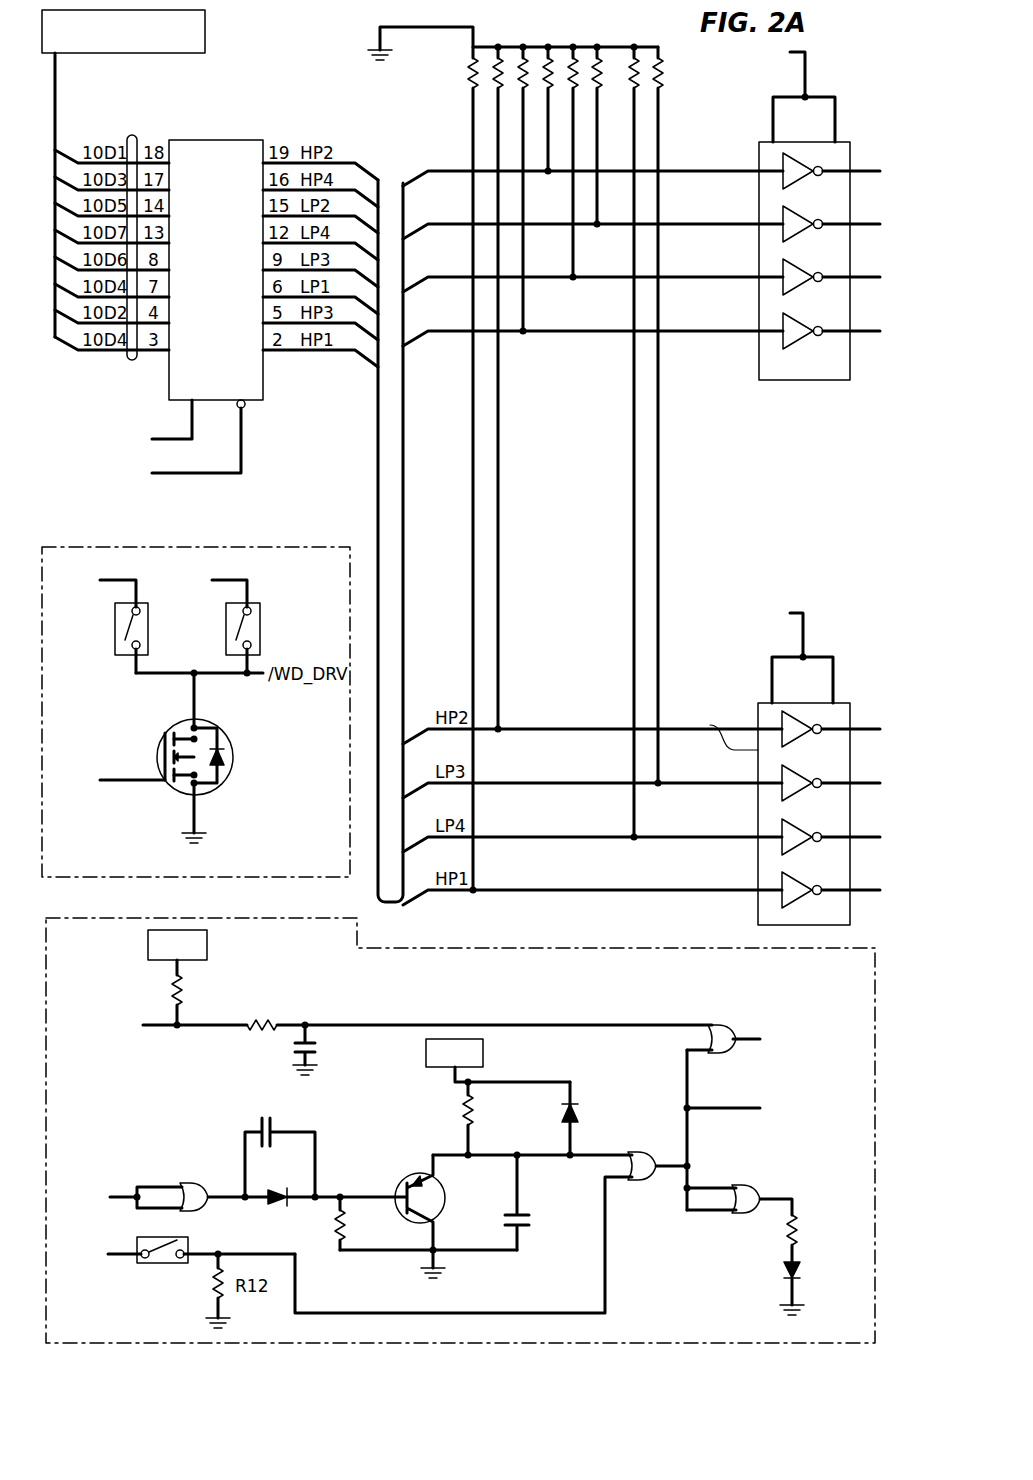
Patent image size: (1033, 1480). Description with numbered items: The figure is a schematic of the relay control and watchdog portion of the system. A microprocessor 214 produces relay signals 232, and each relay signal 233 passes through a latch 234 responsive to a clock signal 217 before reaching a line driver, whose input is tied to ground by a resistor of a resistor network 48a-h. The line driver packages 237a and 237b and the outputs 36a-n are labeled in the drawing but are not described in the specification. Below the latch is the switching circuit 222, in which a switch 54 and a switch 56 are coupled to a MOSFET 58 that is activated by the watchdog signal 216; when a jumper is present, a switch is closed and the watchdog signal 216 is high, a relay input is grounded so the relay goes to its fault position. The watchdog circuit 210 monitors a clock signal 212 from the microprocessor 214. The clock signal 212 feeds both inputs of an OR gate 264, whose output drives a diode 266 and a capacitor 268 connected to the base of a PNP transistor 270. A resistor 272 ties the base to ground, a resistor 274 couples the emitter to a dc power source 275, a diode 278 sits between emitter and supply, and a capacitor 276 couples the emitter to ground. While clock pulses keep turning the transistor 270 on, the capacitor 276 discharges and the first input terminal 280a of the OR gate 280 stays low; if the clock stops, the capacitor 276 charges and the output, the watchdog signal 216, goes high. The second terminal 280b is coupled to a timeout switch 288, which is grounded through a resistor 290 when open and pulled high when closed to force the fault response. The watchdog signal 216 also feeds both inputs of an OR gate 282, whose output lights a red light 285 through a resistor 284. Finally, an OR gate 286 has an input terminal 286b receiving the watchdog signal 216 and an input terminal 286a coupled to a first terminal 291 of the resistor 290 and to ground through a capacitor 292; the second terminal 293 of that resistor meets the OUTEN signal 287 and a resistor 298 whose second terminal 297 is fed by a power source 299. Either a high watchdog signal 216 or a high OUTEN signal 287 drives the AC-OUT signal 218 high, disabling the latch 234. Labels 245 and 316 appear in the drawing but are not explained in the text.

The microprocessor 214 is at (205, 30).
The relay signal 233 is at (58, 150).
The relay signals 232 is at (133, 135).
The latch 234 is at (263, 140).
The clock signal 217 is at (190, 430).
The AC-OUT signal 218 is at (245, 450).
The resistor network 48a-h is at (560, 47).
The driver U12 ULH2060 237a is at (760, 142).
The driver outputs 36a-n is at (783, 340).
The driver U13 ULH2060 237b is at (760, 703).
The switching circuit 222 is at (290, 547).
The switch 54 is at (115, 635).
The switch 56 is at (260, 610).
The MOSFET 58 is at (230, 730).
The watchdog signal 216 is at (118, 783).
The watchdog circuit 210 is at (490, 948).
The power source 299 is at (148, 950).
The second terminal 297 is at (175, 975).
The resistor 298 is at (185, 985).
The OUT EN node 245 is at (175, 1016).
The OUTEN signal 287 is at (157, 1030).
The second terminal 293 is at (205, 1032).
The resistor 290 is at (270, 1015).
The first terminal 291 is at (305, 1022).
The capacitor 292 is at (295, 1050).
The input terminal 286a is at (657, 1025).
The OR gate 286 is at (708, 1022).
The input terminal 286b is at (690, 1053).
The MD output 316 is at (740, 1108).
The clock signal 212 is at (118, 1195).
The OR gate 264 is at (185, 1182).
The capacitor 268 is at (275, 1125).
The diode 266 is at (268, 1202).
The timeout switch 288 is at (137, 1240).
The resistor 272 is at (335, 1240).
The PNP transistor 270 is at (398, 1185).
The dc power source 275 is at (483, 1053).
The resistor 274 is at (460, 1105).
The diode 278 is at (580, 1103).
The capacitor 276 is at (528, 1232).
The first input terminal 280a is at (600, 1160).
The second terminal 280b is at (605, 1295).
The OR gate 280 is at (645, 1180).
The OR gate 282 is at (728, 1178).
The resistor 284 is at (800, 1215).
The red light 285 is at (805, 1270).